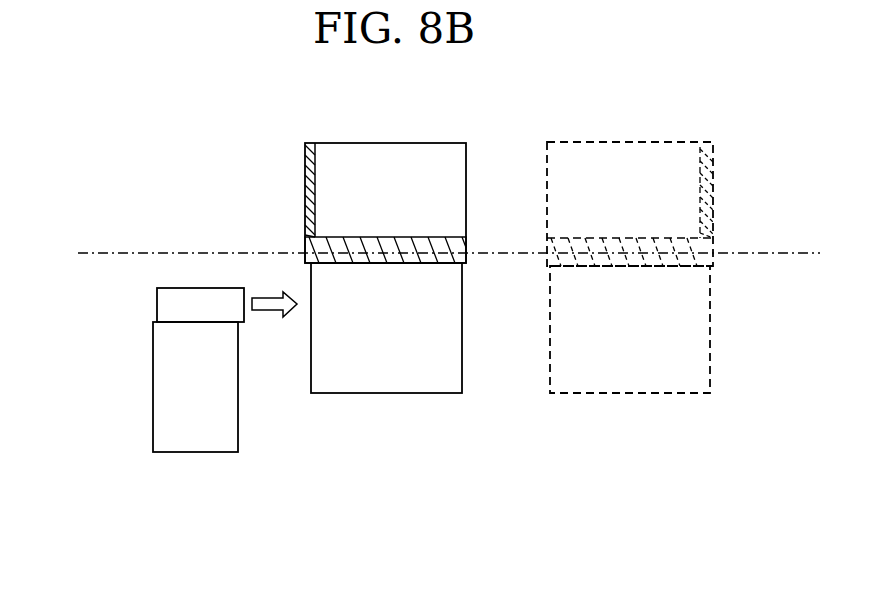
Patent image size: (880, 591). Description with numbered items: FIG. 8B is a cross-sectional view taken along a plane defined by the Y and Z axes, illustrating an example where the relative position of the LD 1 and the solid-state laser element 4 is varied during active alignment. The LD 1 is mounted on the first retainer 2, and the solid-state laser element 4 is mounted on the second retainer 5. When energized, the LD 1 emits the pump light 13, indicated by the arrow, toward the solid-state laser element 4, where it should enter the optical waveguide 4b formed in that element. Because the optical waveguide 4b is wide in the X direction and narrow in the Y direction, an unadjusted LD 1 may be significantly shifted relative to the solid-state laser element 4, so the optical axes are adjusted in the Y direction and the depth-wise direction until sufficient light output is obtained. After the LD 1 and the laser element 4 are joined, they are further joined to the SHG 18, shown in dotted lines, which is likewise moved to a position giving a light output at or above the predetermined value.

The LD 1 is at (185, 303).
The first retainer 2 is at (203, 410).
The pump light 13 is at (270, 303).
The solid-state laser element 4 is at (405, 281).
The optical waveguide 4b is at (362, 262).
The second retainer 5 is at (425, 362).
The SHG 18 is at (577, 170).